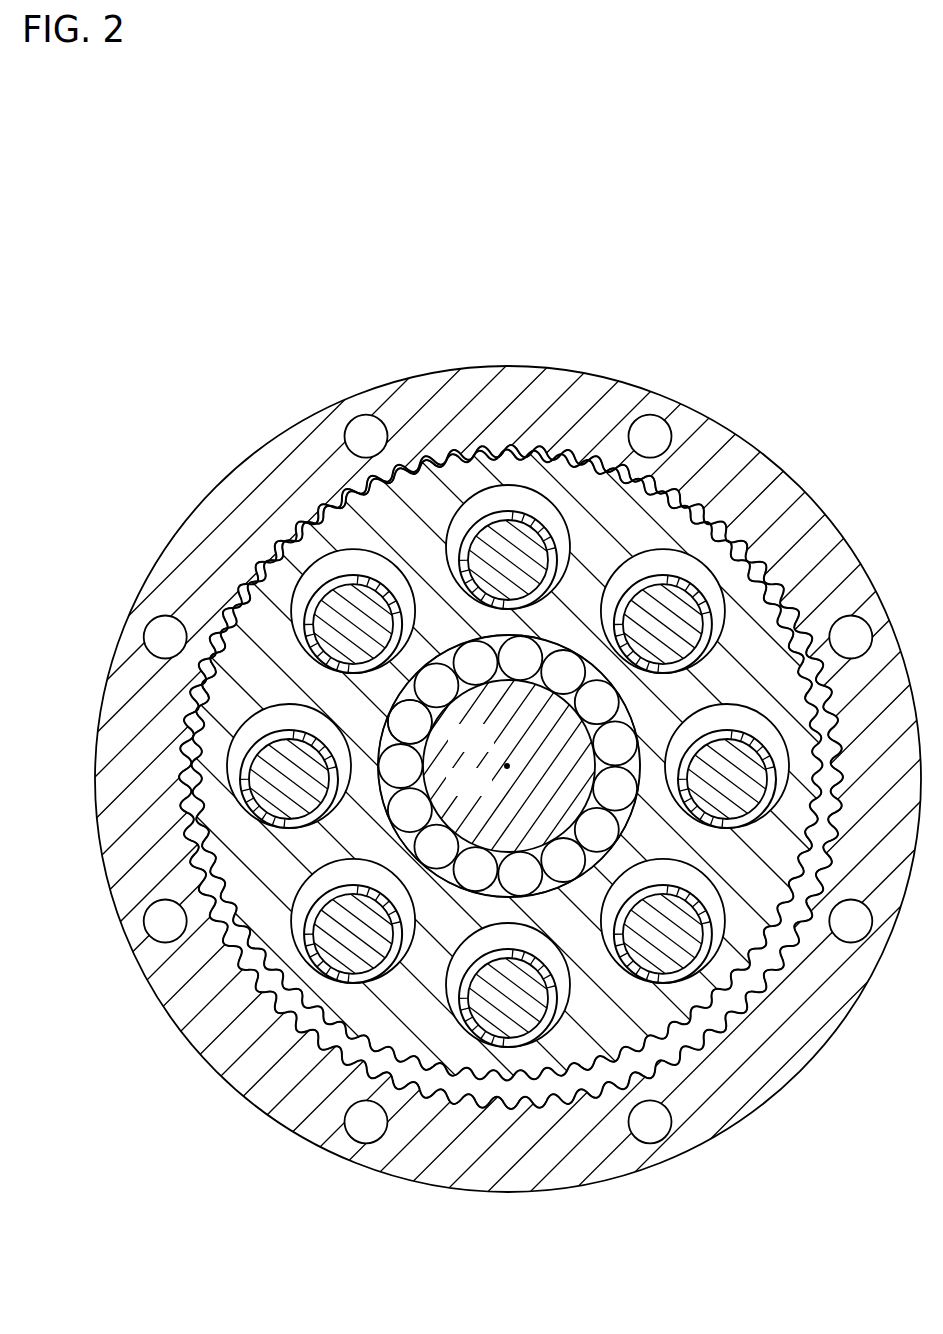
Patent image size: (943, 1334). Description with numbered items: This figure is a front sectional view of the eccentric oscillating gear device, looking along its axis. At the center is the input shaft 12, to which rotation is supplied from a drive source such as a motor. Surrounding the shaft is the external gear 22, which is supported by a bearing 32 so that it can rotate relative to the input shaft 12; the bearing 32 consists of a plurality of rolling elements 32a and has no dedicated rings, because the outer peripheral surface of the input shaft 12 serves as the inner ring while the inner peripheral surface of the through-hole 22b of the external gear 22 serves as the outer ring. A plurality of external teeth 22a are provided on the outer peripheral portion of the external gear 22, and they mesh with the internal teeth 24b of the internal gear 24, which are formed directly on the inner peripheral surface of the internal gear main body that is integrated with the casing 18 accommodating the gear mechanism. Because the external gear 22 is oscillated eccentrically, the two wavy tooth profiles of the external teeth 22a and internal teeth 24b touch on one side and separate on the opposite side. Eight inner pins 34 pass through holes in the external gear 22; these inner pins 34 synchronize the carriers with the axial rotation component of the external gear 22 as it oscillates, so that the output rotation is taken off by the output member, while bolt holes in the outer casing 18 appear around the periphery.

The input shaft 12 is at (604, 794).
The casing 18 is at (597, 1196).
The external gear 22 is at (623, 1075).
The external teeth 22a is at (693, 1012).
The through-hole 22b is at (440, 826).
The internal gear 24 is at (417, 1088).
The internal teeth 24b is at (507, 1094).
The bearing 32 is at (631, 696).
The rolling elements 32a is at (418, 726).
The inner pins 34 is at (533, 1010).